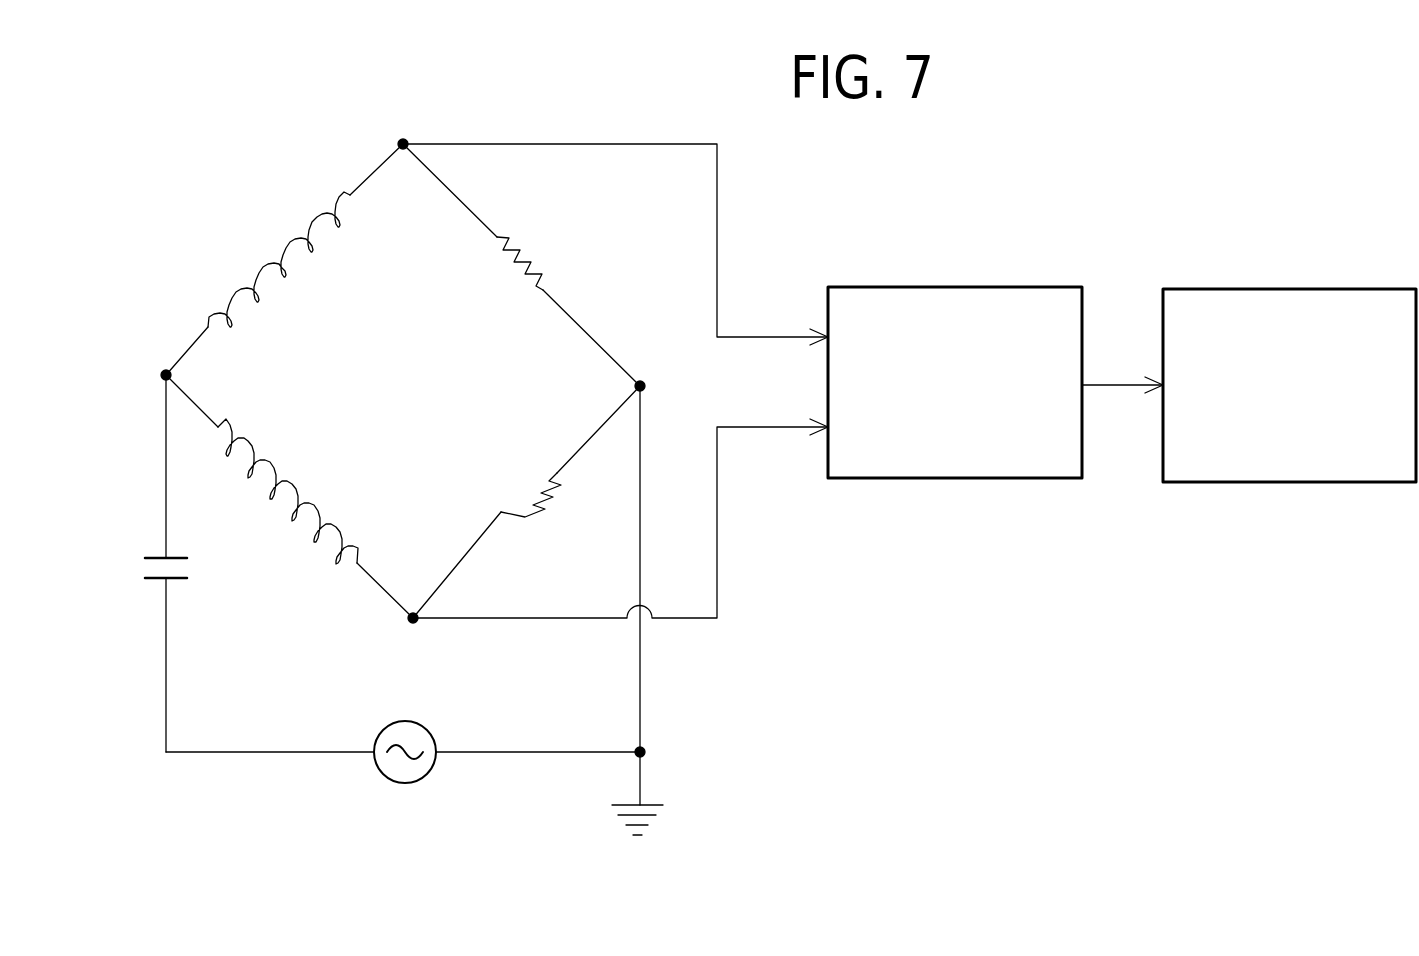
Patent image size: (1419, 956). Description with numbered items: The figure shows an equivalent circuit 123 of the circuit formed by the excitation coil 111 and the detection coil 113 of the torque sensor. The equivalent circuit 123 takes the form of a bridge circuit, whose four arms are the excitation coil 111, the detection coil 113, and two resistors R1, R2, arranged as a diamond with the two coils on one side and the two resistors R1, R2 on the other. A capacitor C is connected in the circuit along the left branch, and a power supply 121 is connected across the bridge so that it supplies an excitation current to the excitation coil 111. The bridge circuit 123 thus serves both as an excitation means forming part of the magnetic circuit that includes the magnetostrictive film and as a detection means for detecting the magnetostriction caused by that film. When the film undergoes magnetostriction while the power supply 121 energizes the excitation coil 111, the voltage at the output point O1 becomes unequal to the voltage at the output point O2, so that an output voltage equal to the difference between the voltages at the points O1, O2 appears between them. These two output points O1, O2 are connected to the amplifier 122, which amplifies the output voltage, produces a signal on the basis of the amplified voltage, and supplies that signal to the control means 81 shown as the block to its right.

The equivalent circuit 123 is at (390, 349).
The excitation coil 111 is at (245, 257).
The detection coil 113 is at (271, 469).
The resistor R1 is at (559, 257).
The resistor R2 is at (554, 522).
The output point O1 is at (590, 203).
The output point O2 is at (581, 547).
The capacitor C is at (196, 563).
The power supply 121 is at (414, 634).
The amplifier 122 is at (955, 338).
The control means 81 is at (1249, 341).